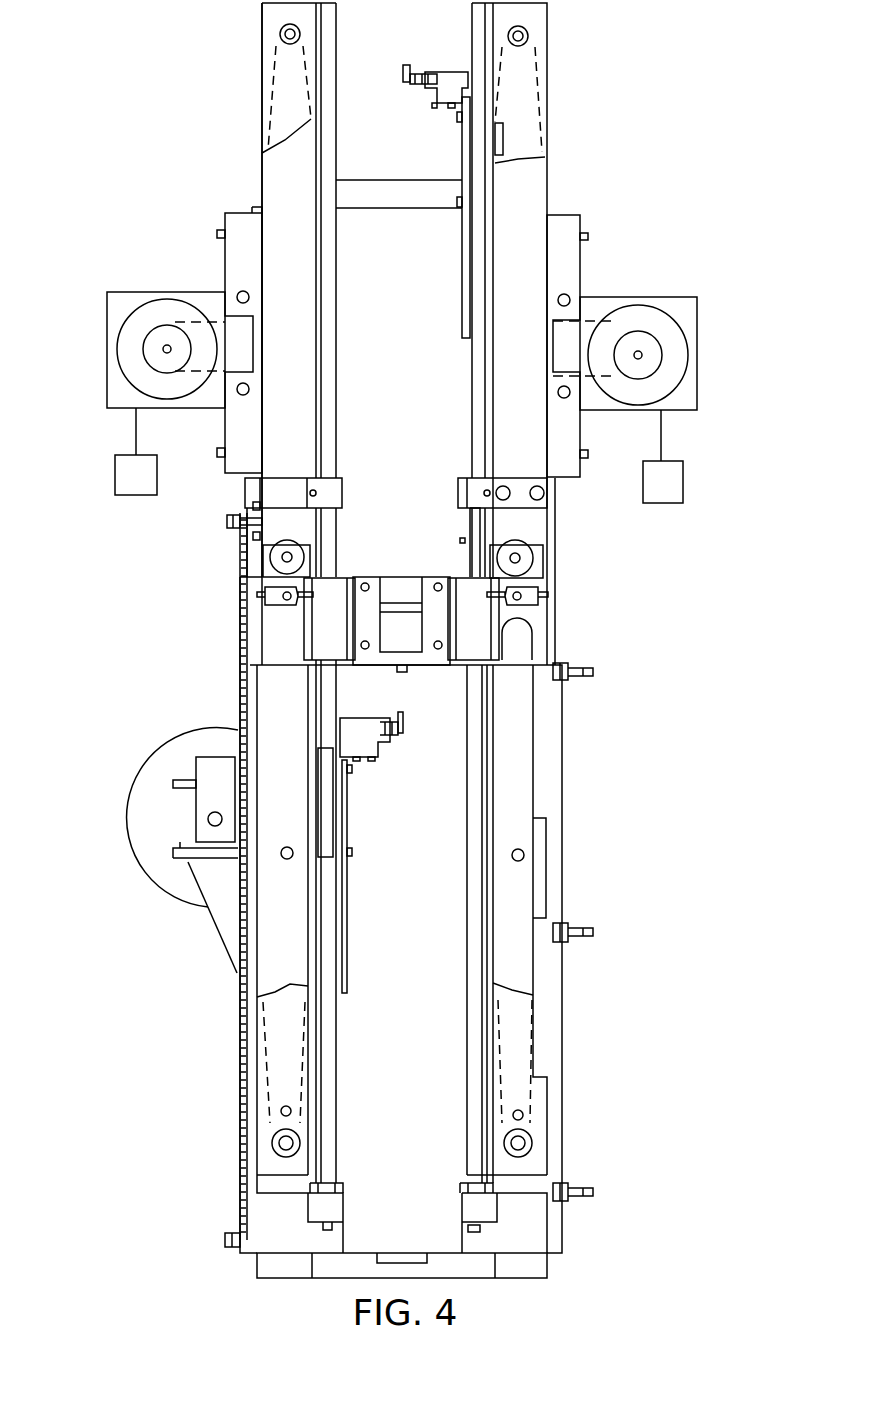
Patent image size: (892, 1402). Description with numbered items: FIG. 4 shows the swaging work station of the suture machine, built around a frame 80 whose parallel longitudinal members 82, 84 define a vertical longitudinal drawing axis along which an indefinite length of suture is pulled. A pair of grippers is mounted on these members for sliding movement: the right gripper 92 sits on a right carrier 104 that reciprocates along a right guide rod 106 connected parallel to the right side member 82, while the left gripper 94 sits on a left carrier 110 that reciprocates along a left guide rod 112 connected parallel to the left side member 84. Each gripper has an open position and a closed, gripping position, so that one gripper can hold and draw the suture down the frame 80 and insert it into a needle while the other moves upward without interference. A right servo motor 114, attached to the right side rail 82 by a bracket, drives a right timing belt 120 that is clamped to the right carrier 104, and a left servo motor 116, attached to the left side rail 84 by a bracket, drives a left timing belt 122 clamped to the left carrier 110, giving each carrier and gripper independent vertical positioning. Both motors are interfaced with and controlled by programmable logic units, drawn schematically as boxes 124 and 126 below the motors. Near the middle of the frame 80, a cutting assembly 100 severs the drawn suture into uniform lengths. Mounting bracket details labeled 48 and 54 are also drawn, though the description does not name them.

The frame 80 is at (607, 103).
The right longitudinal member 82 is at (557, 750).
The left longitudinal member 84 is at (272, 103).
The right gripper 92 is at (403, 70).
The left gripper 94 is at (402, 722).
The cutting assembly 100 is at (404, 594).
The right carrier 104 is at (464, 150).
The right guide rod 106 is at (474, 27).
The left carrier 110 is at (337, 805).
The left guide rod 112 is at (332, 48).
The right servo motor 114 is at (678, 357).
The left servo motor 116 is at (123, 346).
The right timing belt 120 is at (608, 327).
The left timing belt 122 is at (217, 322).
The programmable logic unit 124 is at (664, 504).
The programmable logic unit 126 is at (125, 497).
The left bracket plate 48 is at (241, 396).
The right bracket plate 54 is at (566, 398).